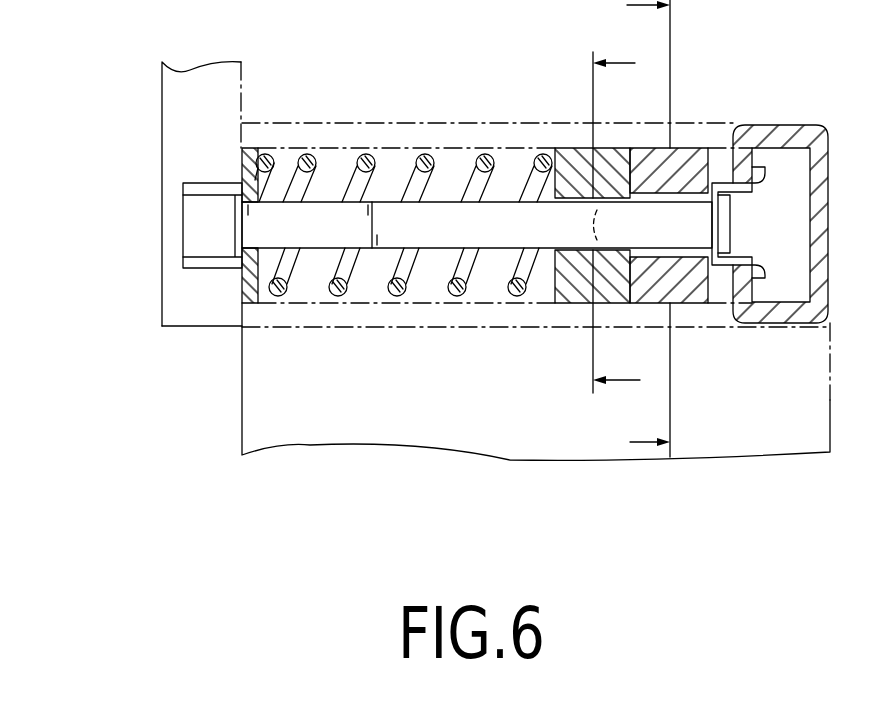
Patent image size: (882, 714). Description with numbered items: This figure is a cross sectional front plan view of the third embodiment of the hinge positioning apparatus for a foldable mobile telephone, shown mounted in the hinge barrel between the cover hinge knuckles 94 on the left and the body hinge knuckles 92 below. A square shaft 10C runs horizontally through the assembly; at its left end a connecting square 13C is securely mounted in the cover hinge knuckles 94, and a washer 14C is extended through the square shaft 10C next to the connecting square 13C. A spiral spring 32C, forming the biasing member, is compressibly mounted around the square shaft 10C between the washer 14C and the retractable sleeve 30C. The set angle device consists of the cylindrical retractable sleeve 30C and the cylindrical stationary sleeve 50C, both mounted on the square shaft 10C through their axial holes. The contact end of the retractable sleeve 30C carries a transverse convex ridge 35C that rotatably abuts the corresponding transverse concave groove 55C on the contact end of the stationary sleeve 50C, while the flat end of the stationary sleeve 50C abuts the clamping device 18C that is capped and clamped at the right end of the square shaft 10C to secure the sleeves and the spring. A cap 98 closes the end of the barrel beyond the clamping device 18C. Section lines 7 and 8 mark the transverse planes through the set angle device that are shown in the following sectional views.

The square shaft 10C is at (393, 208).
The connecting square 13C is at (211, 280).
The washer 14C is at (250, 148).
The clamping device 18C is at (747, 182).
The retractable sleeve 30C is at (563, 136).
The spiral spring 32C is at (307, 142).
The transverse convex ridge 35C is at (653, 297).
The stationary sleeve 50C is at (701, 137).
The transverse concave groove 55C is at (625, 290).
The body hinge knuckles 92 is at (307, 422).
The cover hinge knuckles 94 is at (170, 130).
The cap 98 is at (812, 126).
The section line VII-VII 7 is at (648, 255).
The section line VIII-VIII 8 is at (616, 225).